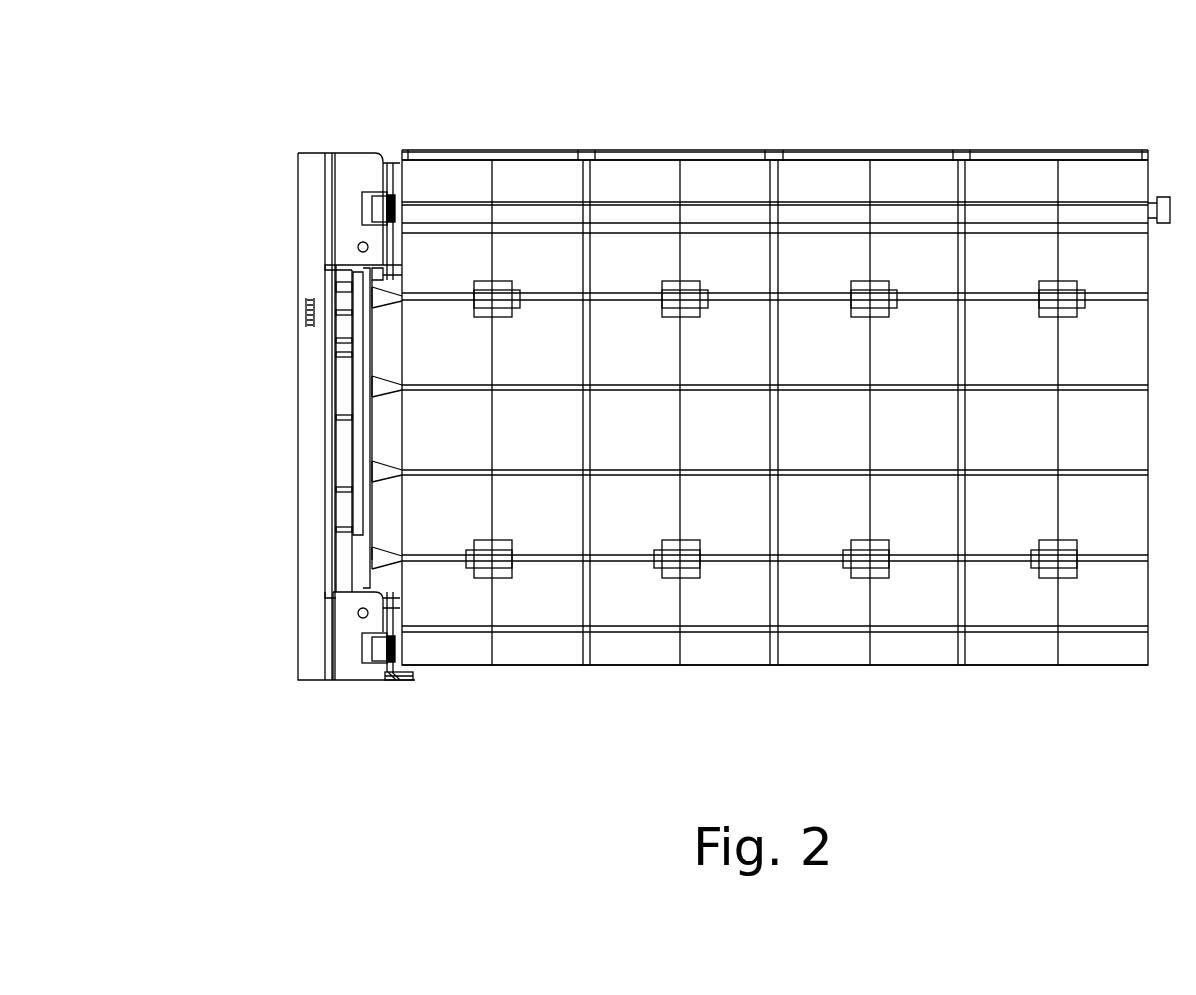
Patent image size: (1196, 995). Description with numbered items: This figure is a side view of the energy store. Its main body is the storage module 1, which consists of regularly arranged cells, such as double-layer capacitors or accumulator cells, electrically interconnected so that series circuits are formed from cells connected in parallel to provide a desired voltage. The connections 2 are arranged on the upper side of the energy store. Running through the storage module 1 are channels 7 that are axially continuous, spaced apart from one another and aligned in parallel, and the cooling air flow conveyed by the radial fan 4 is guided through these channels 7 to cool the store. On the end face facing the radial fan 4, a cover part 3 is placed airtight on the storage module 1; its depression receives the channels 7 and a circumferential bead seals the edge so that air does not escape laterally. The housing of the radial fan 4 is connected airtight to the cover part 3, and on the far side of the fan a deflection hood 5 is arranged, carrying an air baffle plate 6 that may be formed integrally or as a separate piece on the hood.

The storage module 1 is at (786, 342).
The connections 2 is at (529, 152).
The cover part 3 is at (357, 458).
The radial fan 4 is at (344, 298).
The deflection hood 5 is at (318, 405).
The air baffle plate 6 is at (398, 684).
The channel 7 is at (557, 291).